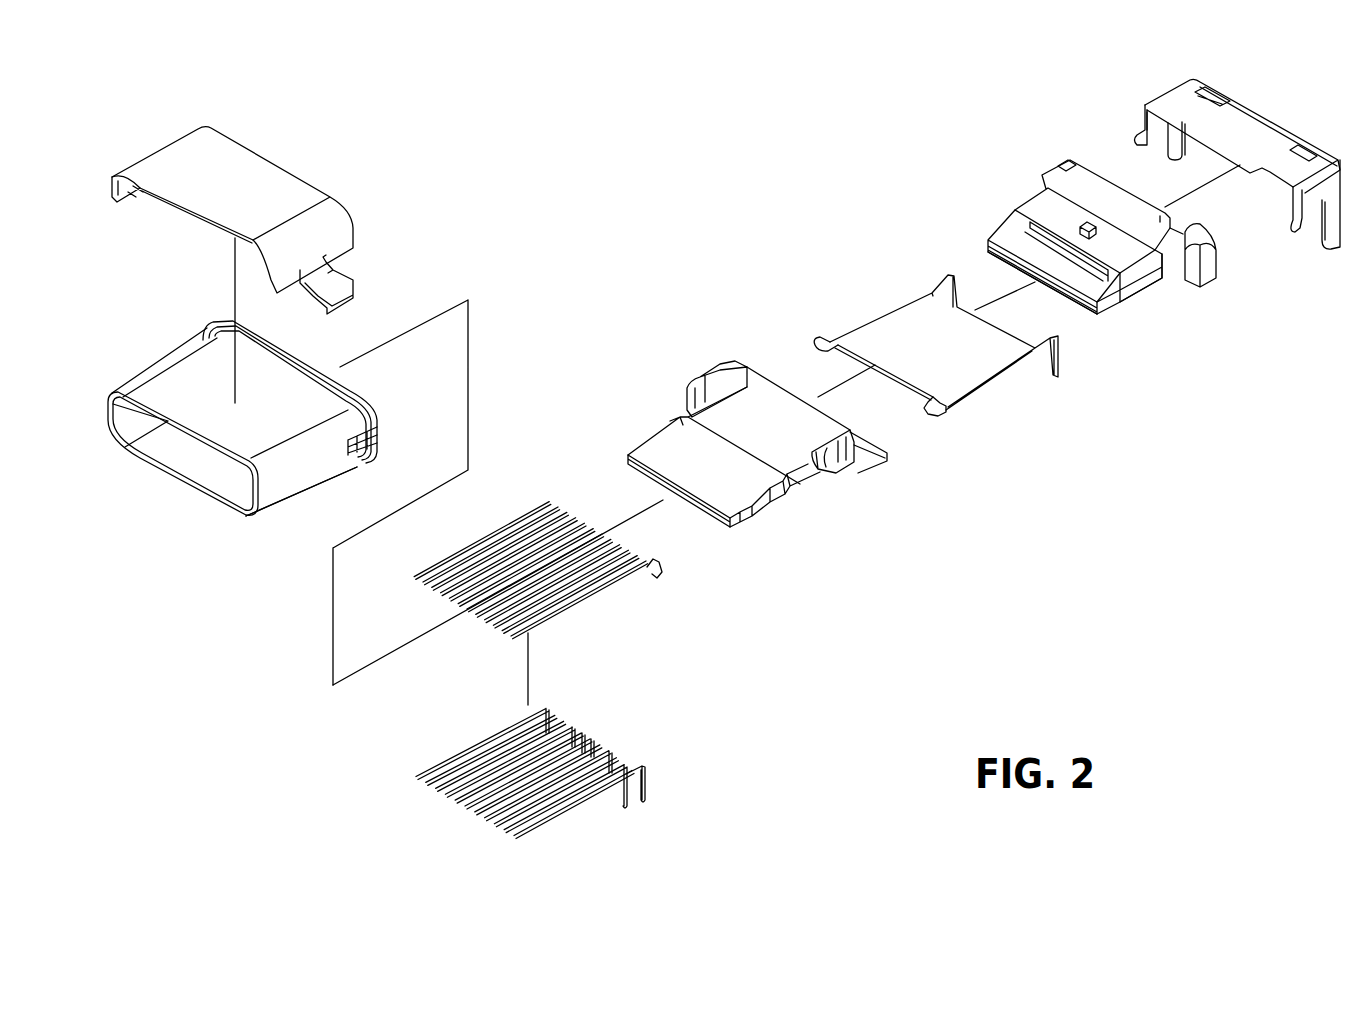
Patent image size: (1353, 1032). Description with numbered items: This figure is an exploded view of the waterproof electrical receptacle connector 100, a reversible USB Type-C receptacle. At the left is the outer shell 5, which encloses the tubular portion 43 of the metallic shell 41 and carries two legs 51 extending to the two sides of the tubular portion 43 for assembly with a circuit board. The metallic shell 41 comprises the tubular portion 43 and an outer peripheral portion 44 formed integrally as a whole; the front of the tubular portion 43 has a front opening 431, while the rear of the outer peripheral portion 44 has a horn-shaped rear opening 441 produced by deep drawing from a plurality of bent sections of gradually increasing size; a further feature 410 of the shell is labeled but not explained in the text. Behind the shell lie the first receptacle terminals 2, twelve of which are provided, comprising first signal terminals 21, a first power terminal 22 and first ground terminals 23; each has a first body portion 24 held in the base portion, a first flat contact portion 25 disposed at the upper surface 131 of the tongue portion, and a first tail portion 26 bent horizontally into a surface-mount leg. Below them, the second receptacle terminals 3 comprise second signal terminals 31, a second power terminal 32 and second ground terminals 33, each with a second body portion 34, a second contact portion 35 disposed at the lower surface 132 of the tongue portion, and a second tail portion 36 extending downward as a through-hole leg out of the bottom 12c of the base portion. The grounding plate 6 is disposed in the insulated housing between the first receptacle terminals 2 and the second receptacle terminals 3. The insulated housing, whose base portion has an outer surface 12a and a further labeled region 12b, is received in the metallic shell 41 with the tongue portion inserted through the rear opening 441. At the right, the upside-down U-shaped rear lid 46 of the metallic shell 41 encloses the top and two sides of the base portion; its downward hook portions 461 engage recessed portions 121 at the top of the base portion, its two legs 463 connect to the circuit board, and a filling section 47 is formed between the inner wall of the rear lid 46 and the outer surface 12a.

The waterproof electrical receptacle connector 100 is at (148, 118).
The outer shell 5 is at (262, 170).
The legs 51 is at (340, 283).
The outer peripheral portion 44 is at (283, 347).
The rear opening 441 is at (363, 407).
The tubular portion 43 is at (303, 490).
The front opening 431 is at (122, 452).
The housing inner cavity 410 is at (190, 473).
The metallic shell 41 is at (243, 538).
The first receptacle terminals 2 is at (452, 545).
The first signal terminals 21 is at (440, 580).
The first power terminal 22 is at (443, 598).
The first ground terminal 23 is at (512, 522).
The first body portion 24 is at (583, 599).
The first flat contact portion 25 is at (513, 639).
The first tail portion 26 is at (664, 563).
The second receptacle terminals 3 is at (401, 749).
The second signal terminals 31 is at (438, 790).
The second power terminal 32 is at (447, 798).
The second ground terminal 33 is at (483, 741).
The second body portion 34 is at (580, 808).
The second contact portion 35 is at (515, 838).
The second tail portion 36 is at (648, 787).
The grounding plate 6 is at (890, 320).
The upper surface 131 is at (738, 496).
The lower surface 132 is at (758, 537).
The bottom 12c is at (874, 478).
The outer surface 12a is at (1035, 213).
The base upper portion 12b is at (1133, 213).
The recessed portions 121 is at (1075, 173).
The rear lid 46 is at (1250, 125).
The filling section 47 is at (1145, 118).
The hook portions 461 is at (1312, 153).
The legs 463 is at (1180, 143).